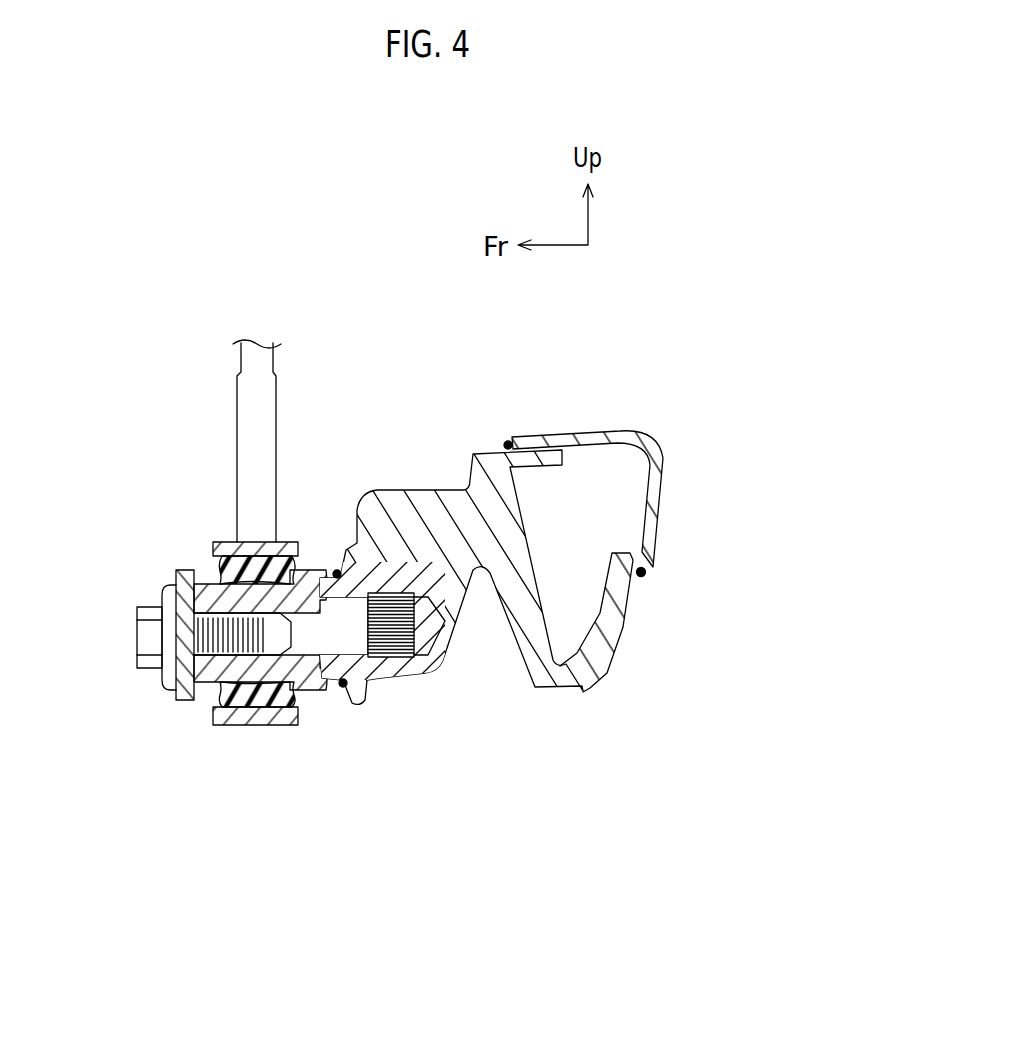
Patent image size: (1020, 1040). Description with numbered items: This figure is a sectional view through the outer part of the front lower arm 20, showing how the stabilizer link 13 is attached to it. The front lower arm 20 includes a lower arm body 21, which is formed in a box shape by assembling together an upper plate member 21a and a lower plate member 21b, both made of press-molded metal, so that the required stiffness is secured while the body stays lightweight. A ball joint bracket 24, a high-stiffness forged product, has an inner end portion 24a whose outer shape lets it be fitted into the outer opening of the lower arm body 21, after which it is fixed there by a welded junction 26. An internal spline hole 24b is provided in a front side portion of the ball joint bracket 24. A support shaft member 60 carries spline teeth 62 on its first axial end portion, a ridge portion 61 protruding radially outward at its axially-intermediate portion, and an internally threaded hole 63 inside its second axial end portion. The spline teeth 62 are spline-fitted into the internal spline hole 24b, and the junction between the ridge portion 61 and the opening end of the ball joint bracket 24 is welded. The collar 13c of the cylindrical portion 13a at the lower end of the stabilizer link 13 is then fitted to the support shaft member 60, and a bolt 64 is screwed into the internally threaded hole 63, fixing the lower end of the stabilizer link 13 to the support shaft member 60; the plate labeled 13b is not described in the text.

The stabilizer link 13 is at (262, 385).
The cylindrical portion 13a is at (222, 541).
The lower plate 13b is at (255, 724).
The collar 13c is at (207, 688).
The front lower arm 20 is at (768, 796).
The lower arm body 21 is at (652, 621).
The upper plate member 21a is at (665, 488).
The lower plate member 21b is at (641, 609).
The ball joint bracket 24 is at (552, 692).
The inner end portion 24a is at (533, 460).
The internal spline hole 24b is at (392, 598).
The welded junction 26 is at (505, 442).
The support shaft member 60 is at (329, 561).
The ridge portion 61 is at (343, 690).
The spline teeth 62 is at (408, 662).
The internally threaded hole 63 is at (207, 617).
The bolt 64 is at (144, 590).